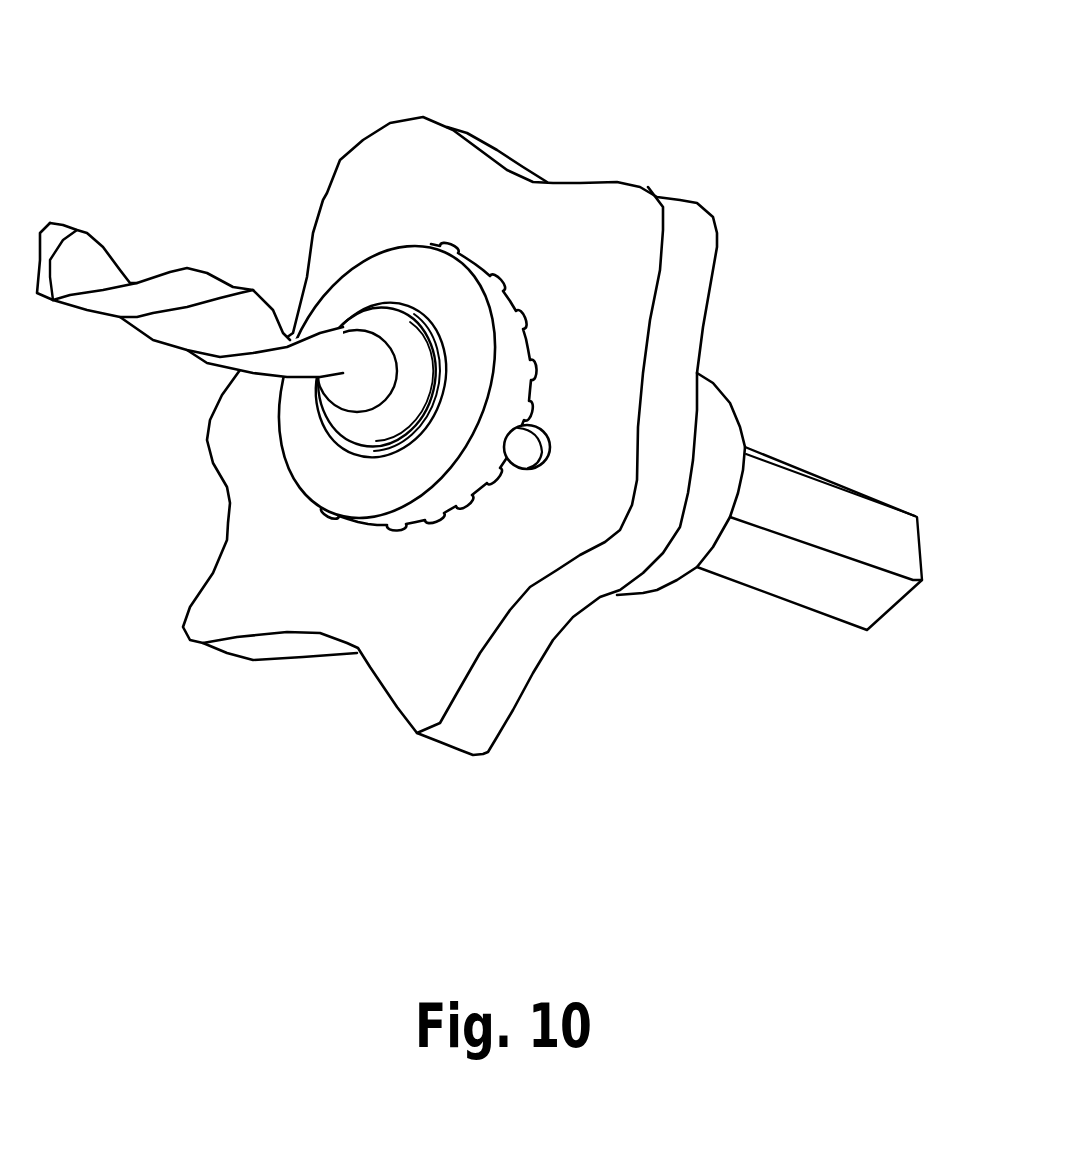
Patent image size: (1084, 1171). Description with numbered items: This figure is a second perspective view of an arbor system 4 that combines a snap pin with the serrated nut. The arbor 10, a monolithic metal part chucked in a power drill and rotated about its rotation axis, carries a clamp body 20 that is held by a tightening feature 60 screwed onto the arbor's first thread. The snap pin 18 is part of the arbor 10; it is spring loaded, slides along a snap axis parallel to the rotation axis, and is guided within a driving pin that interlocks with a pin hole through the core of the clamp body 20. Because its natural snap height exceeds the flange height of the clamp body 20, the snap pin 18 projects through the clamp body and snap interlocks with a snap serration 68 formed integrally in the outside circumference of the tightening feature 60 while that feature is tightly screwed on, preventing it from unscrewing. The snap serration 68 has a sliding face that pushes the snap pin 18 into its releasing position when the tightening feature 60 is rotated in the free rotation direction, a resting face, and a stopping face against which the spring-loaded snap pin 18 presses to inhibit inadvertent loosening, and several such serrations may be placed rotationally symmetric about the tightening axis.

The arbor system 4 is at (680, 753).
The arbor 10 is at (710, 393).
The snap pin 18 is at (523, 440).
The clamp body 20 is at (412, 148).
The tightening feature 60 is at (342, 283).
The snap serration 68 is at (503, 457).